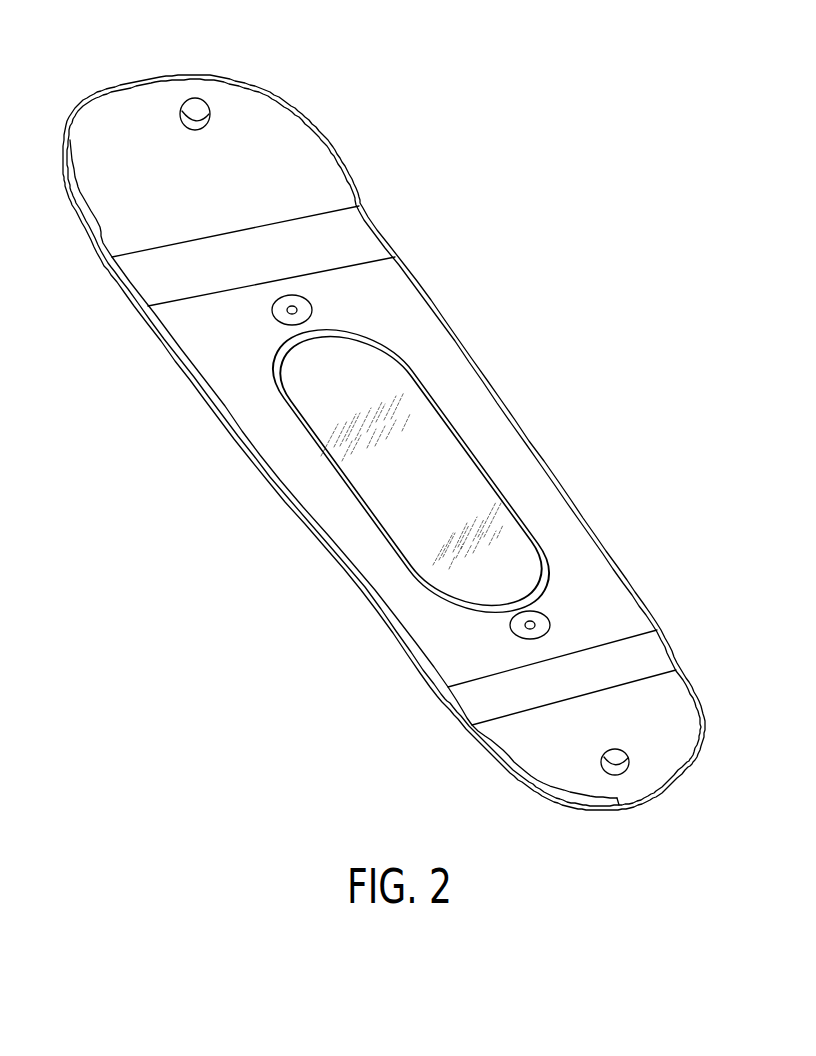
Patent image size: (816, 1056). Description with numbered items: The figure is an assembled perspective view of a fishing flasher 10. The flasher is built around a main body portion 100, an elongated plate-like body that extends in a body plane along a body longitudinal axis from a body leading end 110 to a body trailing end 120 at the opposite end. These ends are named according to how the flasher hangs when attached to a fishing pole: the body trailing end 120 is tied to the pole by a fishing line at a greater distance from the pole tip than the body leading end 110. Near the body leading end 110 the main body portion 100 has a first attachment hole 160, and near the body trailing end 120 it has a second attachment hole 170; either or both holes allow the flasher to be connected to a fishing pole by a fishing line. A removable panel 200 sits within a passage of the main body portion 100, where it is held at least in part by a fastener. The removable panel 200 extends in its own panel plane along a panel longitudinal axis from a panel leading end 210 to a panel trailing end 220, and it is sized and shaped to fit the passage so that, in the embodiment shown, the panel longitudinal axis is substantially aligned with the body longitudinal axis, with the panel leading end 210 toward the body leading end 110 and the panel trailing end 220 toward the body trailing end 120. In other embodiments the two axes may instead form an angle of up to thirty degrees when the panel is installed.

The fishing flasher 10 is at (545, 347).
The main body portion 100 is at (639, 565).
The body leading end 110 is at (626, 811).
The body trailing end 120 is at (141, 90).
The first attachment hole 160 is at (627, 756).
The second attachment hole 170 is at (200, 100).
The removable panel 200 is at (395, 366).
The panel leading end 210 is at (511, 628).
The panel trailing end 220 is at (277, 333).